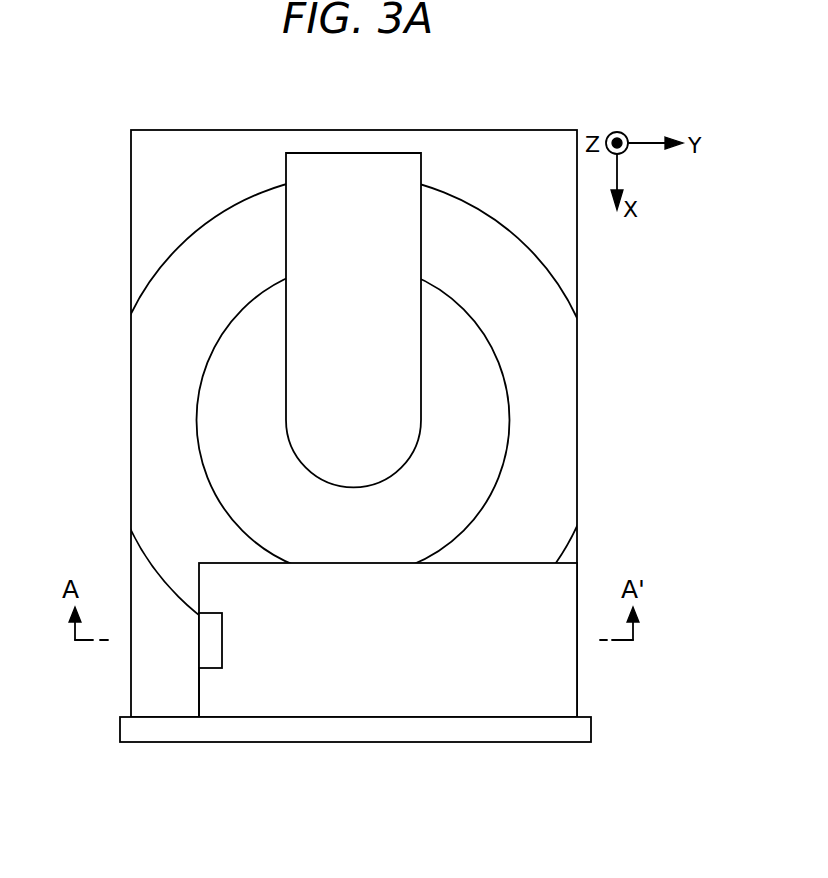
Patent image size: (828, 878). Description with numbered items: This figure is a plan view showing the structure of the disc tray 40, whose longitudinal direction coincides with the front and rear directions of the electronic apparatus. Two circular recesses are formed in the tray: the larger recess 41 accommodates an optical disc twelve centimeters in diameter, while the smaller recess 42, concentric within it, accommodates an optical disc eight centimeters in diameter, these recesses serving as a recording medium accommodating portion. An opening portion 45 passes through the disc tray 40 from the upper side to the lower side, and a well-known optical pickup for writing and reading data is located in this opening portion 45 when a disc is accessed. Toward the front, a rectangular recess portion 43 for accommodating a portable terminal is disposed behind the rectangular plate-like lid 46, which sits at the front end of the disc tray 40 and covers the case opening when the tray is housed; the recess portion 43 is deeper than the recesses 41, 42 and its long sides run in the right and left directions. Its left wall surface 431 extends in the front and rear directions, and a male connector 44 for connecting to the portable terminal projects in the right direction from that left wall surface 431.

The disc tray 40 is at (177, 172).
The recess 41 is at (536, 310).
The recess 42 is at (473, 465).
The recess portion 43 is at (545, 683).
The left wall surface 431 is at (199, 690).
The male connector 44 is at (212, 651).
The opening portion 45 is at (318, 268).
The lid 46 is at (580, 729).